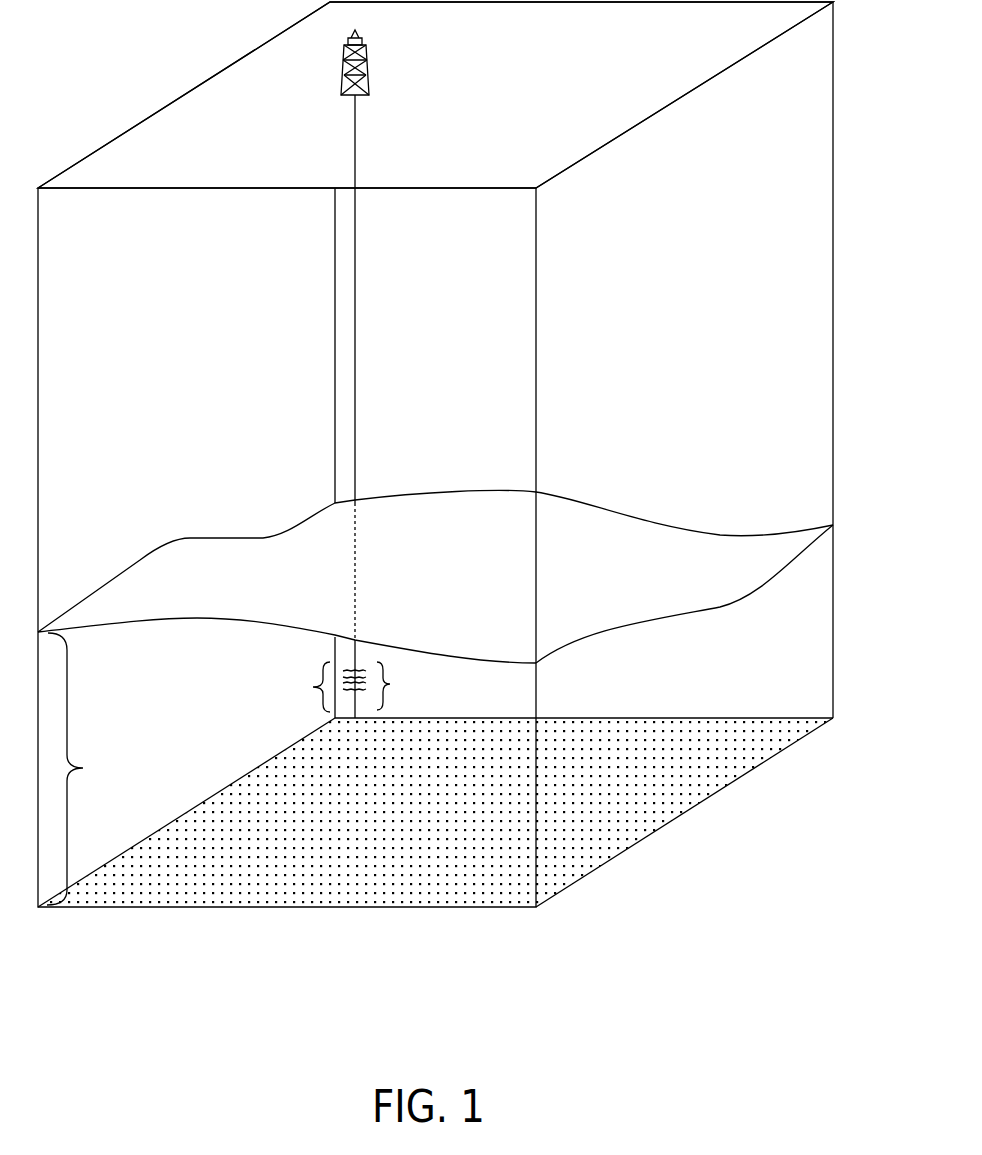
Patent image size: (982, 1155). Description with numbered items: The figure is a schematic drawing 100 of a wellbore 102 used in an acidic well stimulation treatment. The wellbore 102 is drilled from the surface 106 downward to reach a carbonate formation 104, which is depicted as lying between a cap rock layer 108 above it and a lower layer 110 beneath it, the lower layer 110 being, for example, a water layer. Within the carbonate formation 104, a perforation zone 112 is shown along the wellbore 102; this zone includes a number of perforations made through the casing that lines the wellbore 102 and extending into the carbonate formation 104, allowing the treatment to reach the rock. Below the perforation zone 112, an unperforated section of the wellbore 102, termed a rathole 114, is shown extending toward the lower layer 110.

The schematic drawing 100 is at (453, 1075).
The wellbore 102 is at (357, 362).
The carbonate formation 104 is at (95, 769).
The surface 106 is at (203, 108).
The cap rock layer 108 is at (663, 535).
The lower layer 110 is at (330, 908).
The perforation zone 112 is at (313, 680).
The rathole 114 is at (385, 711).